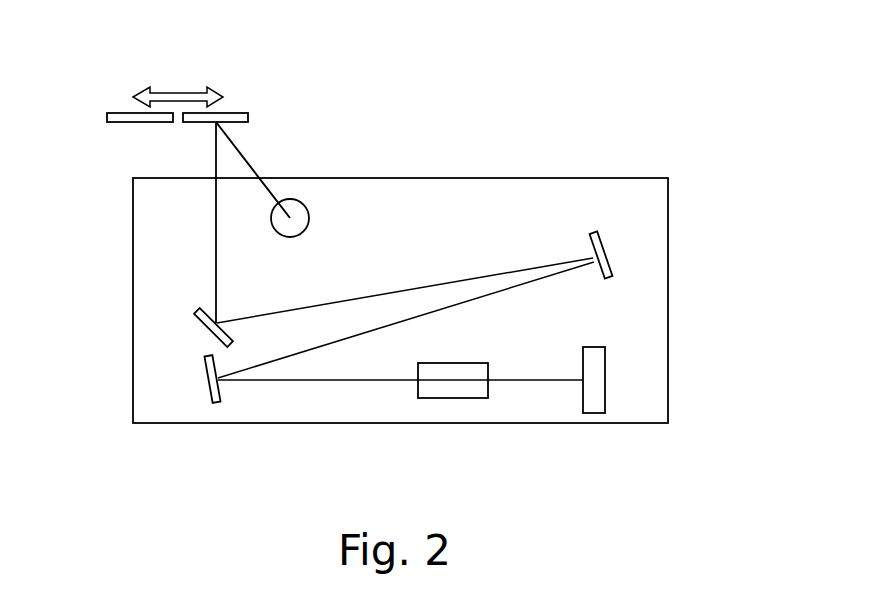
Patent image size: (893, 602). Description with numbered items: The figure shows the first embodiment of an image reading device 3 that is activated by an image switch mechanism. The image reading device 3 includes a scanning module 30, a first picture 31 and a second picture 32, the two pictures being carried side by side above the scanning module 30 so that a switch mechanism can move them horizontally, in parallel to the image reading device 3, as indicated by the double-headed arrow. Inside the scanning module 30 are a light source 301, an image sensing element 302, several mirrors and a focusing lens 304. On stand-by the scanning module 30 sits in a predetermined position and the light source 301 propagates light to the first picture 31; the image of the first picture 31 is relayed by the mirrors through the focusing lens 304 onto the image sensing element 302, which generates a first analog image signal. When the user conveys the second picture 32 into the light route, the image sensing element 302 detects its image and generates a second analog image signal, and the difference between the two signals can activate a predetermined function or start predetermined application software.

The image reading device 3 is at (437, 118).
The scanning module 30 is at (570, 182).
The first picture 31 is at (235, 113).
The second picture 32 is at (122, 112).
The light source 301 is at (293, 210).
The image sensing element 302 is at (597, 382).
The focusing lens 304 is at (470, 390).